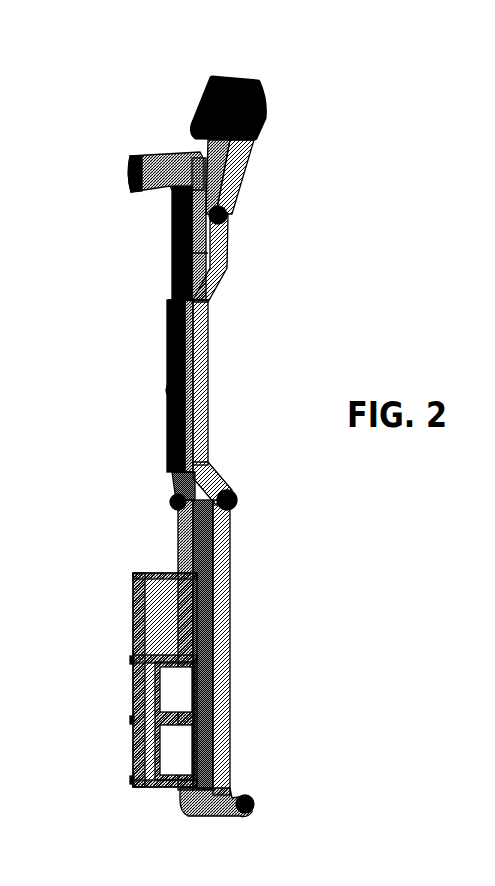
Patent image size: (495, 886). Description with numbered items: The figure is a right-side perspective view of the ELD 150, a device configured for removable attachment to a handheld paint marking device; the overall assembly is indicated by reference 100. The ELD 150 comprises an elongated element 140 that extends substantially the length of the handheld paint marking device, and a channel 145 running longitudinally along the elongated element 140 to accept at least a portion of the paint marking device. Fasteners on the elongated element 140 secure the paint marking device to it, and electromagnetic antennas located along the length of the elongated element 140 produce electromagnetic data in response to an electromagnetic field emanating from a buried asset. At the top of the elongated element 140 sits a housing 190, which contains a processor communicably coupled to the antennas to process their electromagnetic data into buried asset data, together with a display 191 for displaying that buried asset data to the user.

The device 100 is at (110, 55).
The housing 190 is at (229, 72).
The display 191 is at (259, 86).
The elongated element 140 is at (227, 272).
The channel 145 is at (193, 340).
The ELD 150 is at (164, 448).